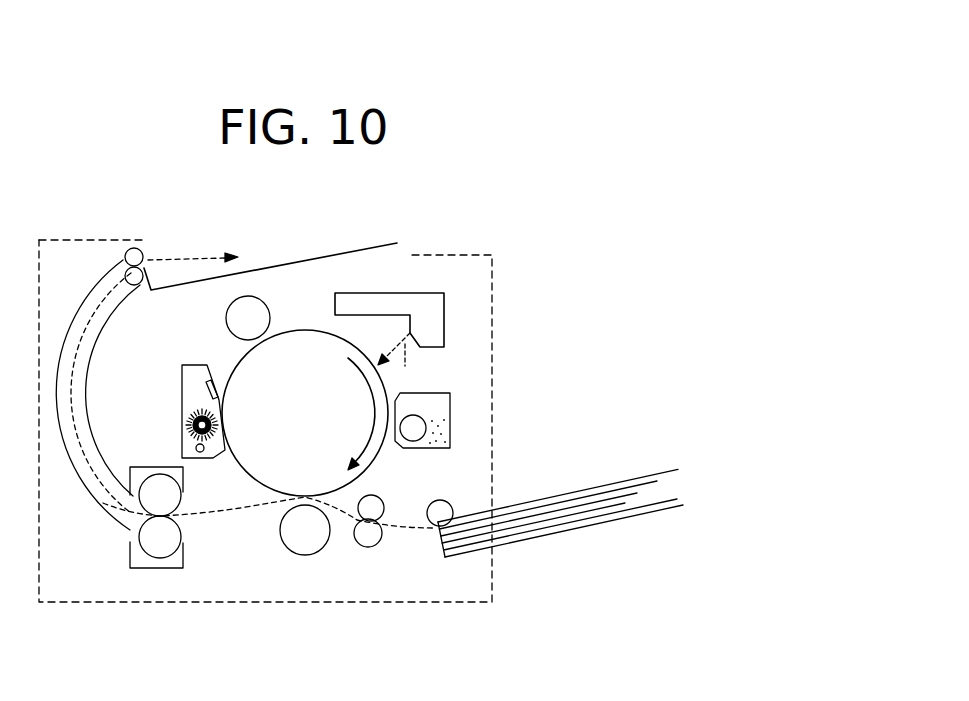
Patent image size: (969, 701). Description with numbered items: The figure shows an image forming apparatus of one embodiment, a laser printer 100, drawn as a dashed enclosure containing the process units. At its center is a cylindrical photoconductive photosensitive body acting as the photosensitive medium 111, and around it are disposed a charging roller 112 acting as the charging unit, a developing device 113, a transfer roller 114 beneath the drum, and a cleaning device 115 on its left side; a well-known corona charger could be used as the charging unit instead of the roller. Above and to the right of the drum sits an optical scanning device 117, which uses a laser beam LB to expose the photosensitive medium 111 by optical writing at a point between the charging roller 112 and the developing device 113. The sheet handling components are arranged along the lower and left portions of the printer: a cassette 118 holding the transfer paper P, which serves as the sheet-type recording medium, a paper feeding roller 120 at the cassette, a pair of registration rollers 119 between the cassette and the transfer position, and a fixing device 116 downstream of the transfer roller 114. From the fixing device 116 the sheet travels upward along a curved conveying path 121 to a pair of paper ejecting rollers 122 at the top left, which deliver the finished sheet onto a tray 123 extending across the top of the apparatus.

The laser printer 100 is at (522, 283).
The photosensitive medium 111 is at (300, 330).
The charging roller 112 is at (233, 318).
The developing device 113 is at (440, 393).
The transfer roller 114 is at (313, 553).
The cleaning device 115 is at (193, 364).
The fixing device 116 is at (184, 557).
The optical scanning device 117 is at (418, 293).
The cassette 118 is at (545, 538).
The pair of registration rollers 119 is at (395, 482).
The paper feeding roller 120 is at (440, 508).
The conveying path 121 is at (60, 383).
The pair of paper ejecting rollers 122 is at (143, 272).
The tray 123 is at (347, 252).
The transfer paper P is at (543, 507).
The laser beam LB is at (403, 364).